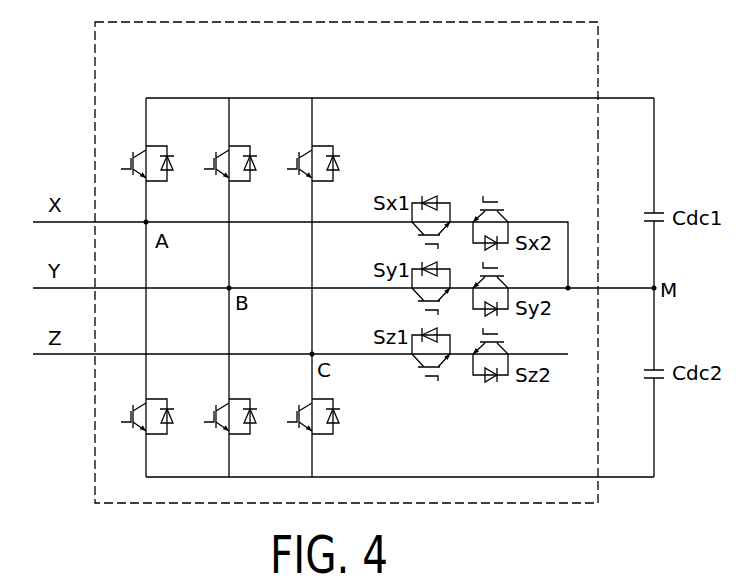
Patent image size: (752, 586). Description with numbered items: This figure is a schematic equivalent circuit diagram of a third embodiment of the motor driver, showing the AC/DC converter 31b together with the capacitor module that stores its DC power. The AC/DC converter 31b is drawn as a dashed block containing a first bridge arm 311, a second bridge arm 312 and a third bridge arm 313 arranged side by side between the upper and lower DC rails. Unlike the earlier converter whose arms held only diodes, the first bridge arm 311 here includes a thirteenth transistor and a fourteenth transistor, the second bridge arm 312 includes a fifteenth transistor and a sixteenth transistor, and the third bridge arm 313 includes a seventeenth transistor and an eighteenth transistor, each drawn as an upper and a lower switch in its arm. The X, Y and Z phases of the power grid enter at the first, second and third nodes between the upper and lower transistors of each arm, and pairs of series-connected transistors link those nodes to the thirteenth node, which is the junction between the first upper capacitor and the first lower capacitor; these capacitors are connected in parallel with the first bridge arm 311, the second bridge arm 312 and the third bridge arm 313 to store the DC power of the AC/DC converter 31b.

The first bridge arm 311 is at (152, 80).
The second bridge arm 312 is at (235, 80).
The third bridge arm 313 is at (318, 80).
The AC/DC converter 31b is at (598, 62).